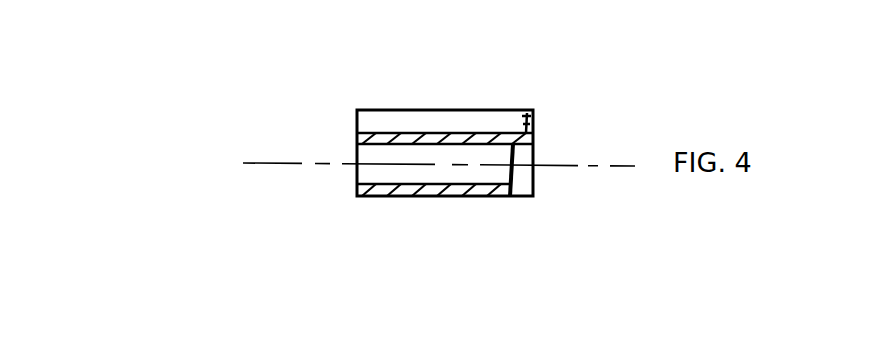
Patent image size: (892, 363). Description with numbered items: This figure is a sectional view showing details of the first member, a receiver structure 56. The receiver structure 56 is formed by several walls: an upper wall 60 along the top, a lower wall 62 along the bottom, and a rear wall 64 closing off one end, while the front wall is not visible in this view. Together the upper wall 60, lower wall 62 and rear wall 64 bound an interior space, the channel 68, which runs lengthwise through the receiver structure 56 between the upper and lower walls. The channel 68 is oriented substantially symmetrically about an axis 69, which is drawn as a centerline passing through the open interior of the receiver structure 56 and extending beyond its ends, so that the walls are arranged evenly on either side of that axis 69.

The receiver structure 56 is at (414, 179).
The upper wall 60 is at (358, 138).
The lower wall 62 is at (358, 196).
The rear wall 64 is at (358, 178).
The channel 68 is at (377, 157).
The axis 69 is at (565, 166).